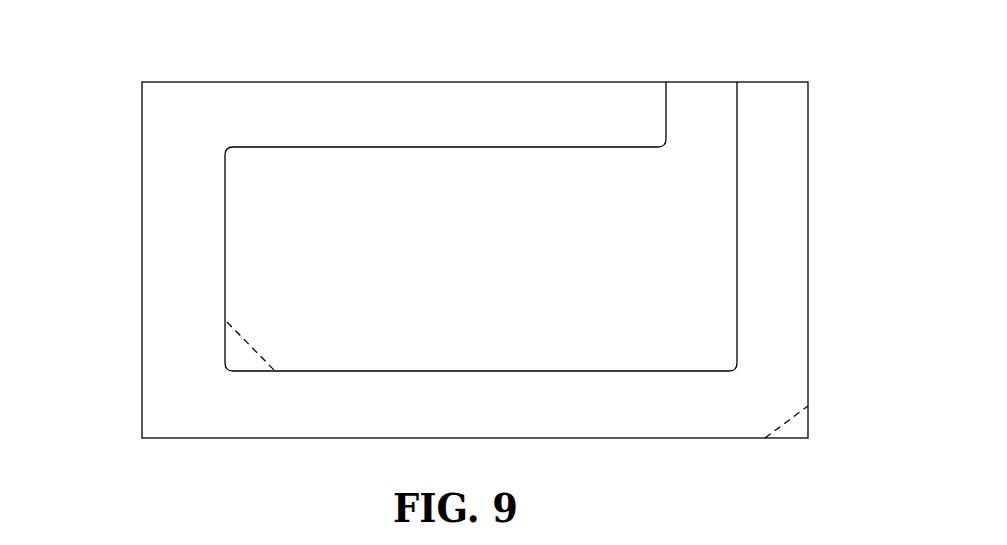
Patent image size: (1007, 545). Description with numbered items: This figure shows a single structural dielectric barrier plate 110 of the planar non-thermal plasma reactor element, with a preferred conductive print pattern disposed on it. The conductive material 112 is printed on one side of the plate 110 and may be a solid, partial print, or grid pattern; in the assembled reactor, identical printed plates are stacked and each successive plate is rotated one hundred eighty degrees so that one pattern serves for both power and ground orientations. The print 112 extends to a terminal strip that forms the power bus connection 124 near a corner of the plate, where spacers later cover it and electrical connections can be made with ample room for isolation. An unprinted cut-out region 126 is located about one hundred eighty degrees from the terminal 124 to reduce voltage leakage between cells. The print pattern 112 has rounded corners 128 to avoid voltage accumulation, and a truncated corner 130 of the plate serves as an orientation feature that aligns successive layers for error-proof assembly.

The single structural dielectric barrier plate 110 is at (96, 175).
The conductive material 112 is at (474, 200).
The power bus connection 124 is at (698, 122).
The unprinted cut-out region 126 is at (236, 351).
The rounded corners 128 is at (227, 150).
The truncated corner 130 is at (797, 427).